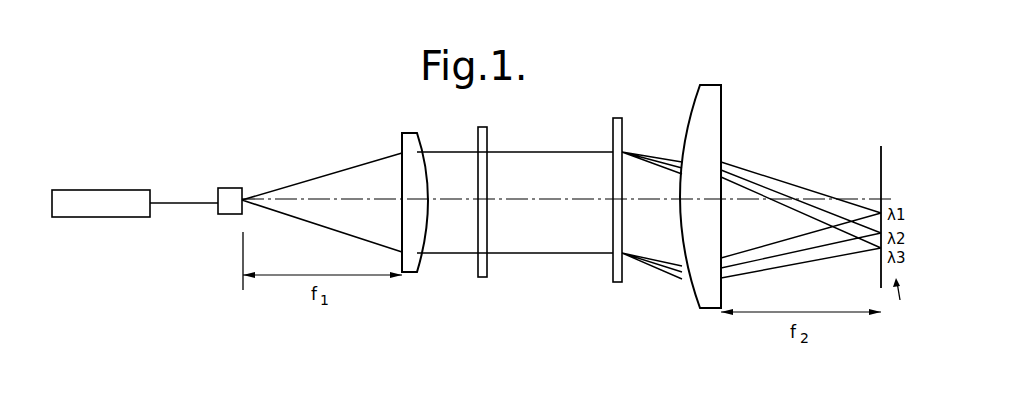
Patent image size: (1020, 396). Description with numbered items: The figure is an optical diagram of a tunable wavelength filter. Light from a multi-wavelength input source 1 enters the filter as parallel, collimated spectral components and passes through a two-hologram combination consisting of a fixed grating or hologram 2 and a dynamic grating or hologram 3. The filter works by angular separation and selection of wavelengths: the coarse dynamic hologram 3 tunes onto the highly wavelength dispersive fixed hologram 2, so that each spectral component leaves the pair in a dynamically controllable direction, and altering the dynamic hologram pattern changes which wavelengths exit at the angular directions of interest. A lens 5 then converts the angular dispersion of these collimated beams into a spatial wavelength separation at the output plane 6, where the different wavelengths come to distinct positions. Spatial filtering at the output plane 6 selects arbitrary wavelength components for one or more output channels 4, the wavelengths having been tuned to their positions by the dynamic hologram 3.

The multi-wavelength input source 1 is at (127, 190).
The fixed grating or hologram 2 is at (623, 143).
The dynamic grating or hologram 3 is at (487, 137).
The output channel 4 is at (904, 296).
The lens 5 is at (722, 116).
The output plane 6 is at (882, 170).